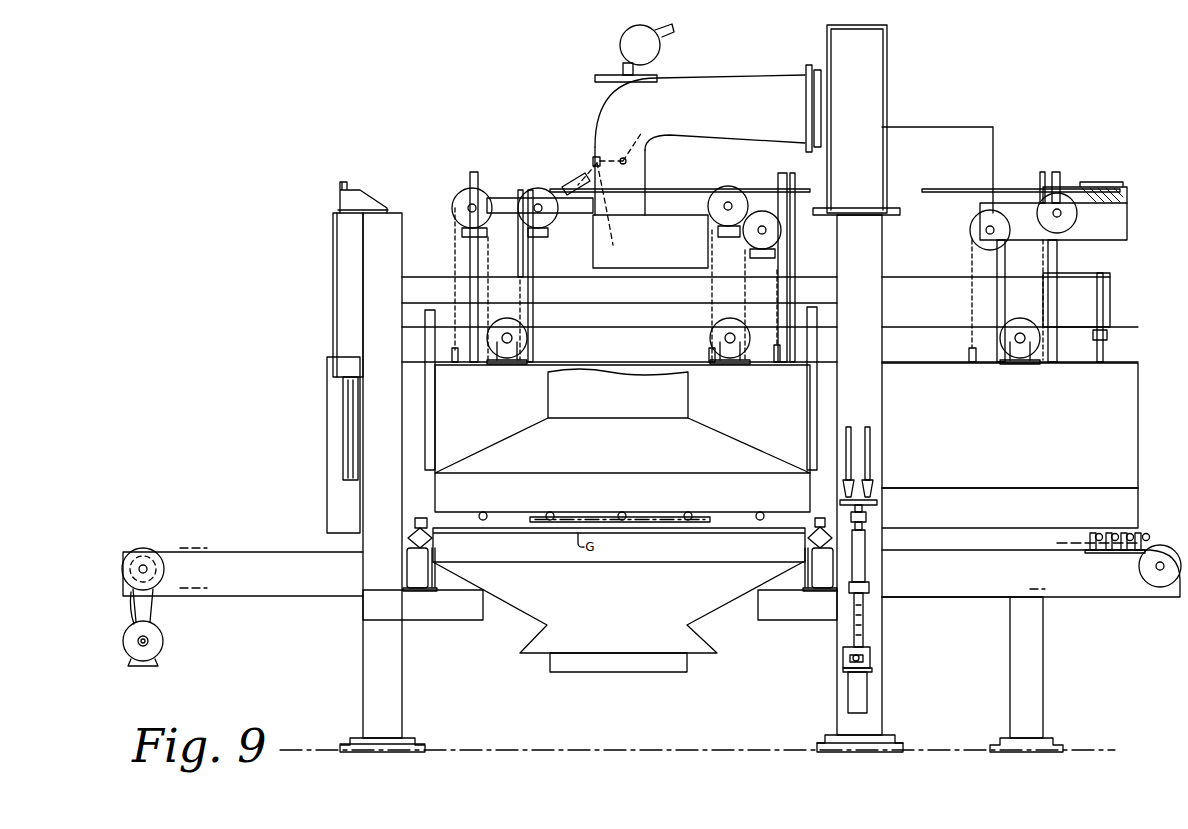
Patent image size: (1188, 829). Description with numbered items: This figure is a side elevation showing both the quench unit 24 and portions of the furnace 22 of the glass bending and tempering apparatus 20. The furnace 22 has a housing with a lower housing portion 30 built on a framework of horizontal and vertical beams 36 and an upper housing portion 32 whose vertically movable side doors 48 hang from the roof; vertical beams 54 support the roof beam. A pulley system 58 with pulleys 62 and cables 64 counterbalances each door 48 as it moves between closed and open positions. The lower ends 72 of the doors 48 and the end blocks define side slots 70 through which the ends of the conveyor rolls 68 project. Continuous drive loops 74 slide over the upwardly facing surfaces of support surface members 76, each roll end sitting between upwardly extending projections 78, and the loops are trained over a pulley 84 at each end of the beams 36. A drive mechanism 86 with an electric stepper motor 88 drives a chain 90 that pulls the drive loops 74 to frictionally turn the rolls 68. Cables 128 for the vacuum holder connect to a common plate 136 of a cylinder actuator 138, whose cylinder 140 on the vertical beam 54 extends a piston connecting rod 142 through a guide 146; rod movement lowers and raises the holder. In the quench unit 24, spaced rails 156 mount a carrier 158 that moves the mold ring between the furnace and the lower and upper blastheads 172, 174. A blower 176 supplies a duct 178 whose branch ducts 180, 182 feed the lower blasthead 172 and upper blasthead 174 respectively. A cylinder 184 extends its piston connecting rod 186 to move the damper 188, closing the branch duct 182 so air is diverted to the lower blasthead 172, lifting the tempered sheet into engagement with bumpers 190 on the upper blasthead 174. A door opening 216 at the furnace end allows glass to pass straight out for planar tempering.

The glass bending and tempering apparatus 20 is at (303, 194).
The furnace 22 is at (1128, 214).
The quench unit 24 is at (471, 685).
The lower housing portion 30 is at (936, 599).
The upper housing portion 32 is at (1104, 363).
The horizontal and vertical beams 36 is at (326, 584).
The side doors 48 is at (893, 387).
The vertical beams 54 is at (398, 634).
The pulley system 58 is at (455, 195).
The pulleys 62 is at (523, 197).
The cables 64 is at (492, 257).
The conveyor rolls 68 is at (1130, 532).
The side slots 70 is at (992, 537).
The lower ends 72 is at (973, 527).
The continuous drive loops 74 is at (173, 548).
The support surface members 76 is at (1130, 553).
The upwardly extending projections 78 is at (1094, 550).
The pulley 84 is at (138, 549).
The drive mechanism 86 is at (172, 609).
The electric stepper motor 88 is at (160, 647).
The chain 90 is at (133, 600).
The cables 128 is at (868, 432).
The common plate 136 is at (866, 512).
The cylinder actuator 138 is at (840, 633).
The cylinder 140 is at (866, 700).
The piston connecting rod 142 is at (863, 628).
The guide 146 is at (870, 586).
The rails 156 is at (408, 536).
The carrier 158 is at (418, 518).
The lower blasthead 172 is at (722, 609).
The upper blasthead 174 is at (721, 422).
The blower 176 is at (620, 43).
The duct 178 is at (656, 73).
The branch duct 180 is at (713, 93).
The branch duct 182 is at (647, 178).
The cylinder 184 is at (577, 182).
The piston connecting rod 186 is at (612, 216).
The damper 188 is at (642, 138).
The bumpers 190 is at (549, 511).
The door opening 216 is at (330, 530).